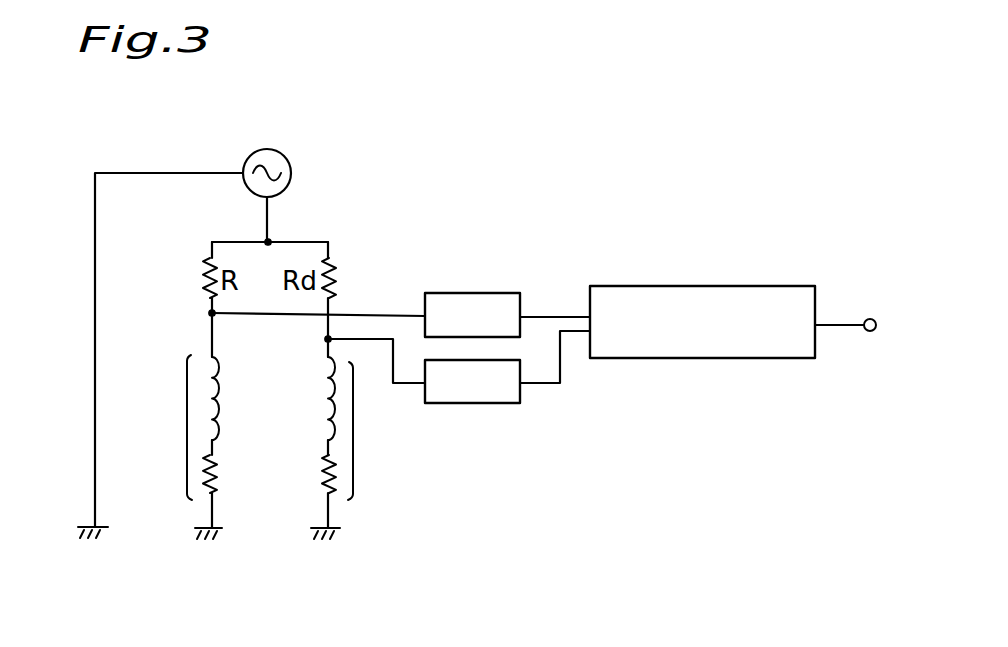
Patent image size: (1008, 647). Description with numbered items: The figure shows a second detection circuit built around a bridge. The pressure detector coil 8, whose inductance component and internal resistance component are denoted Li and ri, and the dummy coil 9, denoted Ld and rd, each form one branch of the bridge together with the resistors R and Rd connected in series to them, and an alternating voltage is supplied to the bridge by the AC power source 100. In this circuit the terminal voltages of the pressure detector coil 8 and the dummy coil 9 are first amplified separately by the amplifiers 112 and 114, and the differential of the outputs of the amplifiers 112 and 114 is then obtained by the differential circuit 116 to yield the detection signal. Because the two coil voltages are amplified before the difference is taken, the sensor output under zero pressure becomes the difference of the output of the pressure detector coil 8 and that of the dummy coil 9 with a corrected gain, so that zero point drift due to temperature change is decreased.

The AC power source 100 is at (292, 165).
The pressure detector coil 8 is at (185, 440).
The dummy coil 9 is at (355, 443).
The amplifier 112 is at (515, 293).
The amplifier 114 is at (498, 403).
The differential circuit 116 is at (790, 286).